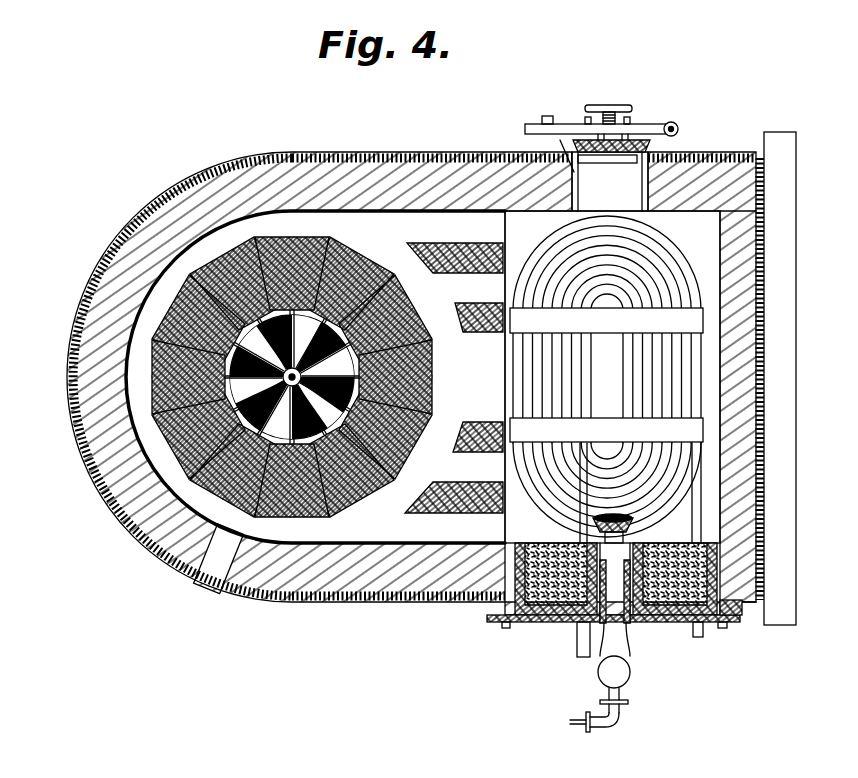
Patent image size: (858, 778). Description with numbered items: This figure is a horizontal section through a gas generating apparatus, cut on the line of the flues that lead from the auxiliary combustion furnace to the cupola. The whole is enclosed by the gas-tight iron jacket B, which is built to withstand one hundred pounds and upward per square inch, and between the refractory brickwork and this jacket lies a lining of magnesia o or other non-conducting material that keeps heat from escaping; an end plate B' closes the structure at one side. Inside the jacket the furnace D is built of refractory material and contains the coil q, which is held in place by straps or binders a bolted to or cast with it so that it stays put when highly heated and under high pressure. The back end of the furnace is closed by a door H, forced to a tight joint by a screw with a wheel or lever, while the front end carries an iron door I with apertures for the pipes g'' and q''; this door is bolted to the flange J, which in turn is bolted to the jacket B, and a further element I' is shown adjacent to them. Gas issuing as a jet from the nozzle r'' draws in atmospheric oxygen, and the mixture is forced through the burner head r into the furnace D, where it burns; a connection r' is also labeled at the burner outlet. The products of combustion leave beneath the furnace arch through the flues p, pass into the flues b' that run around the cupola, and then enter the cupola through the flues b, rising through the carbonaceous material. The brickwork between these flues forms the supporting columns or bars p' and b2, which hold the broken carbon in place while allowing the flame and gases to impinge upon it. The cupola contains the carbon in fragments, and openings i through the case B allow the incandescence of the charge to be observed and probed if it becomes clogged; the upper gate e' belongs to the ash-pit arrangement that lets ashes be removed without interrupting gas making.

The iron jacket B is at (411, 380).
The lining of magnesia o is at (437, 160).
The end plate of casing B' is at (799, 378).
The door H is at (640, 140).
The furnace D is at (612, 377).
The coil q is at (628, 379).
The straps or binders a is at (606, 376).
The burner head r is at (625, 529).
The flues p is at (482, 377).
The supporting columns or bars p' is at (451, 378).
The upper gate e' is at (292, 377).
The flues b is at (292, 377).
The flues b' is at (308, 369).
The supporting columns or bars b2 is at (332, 520).
The openings i is at (212, 580).
The iron door I is at (603, 636).
The filter boxes I' is at (616, 600).
The flange J is at (736, 620).
The pipe g'' is at (709, 644).
The drain pipe r' is at (634, 600).
The nozzle r'' is at (636, 684).
The pipe q'' is at (592, 694).